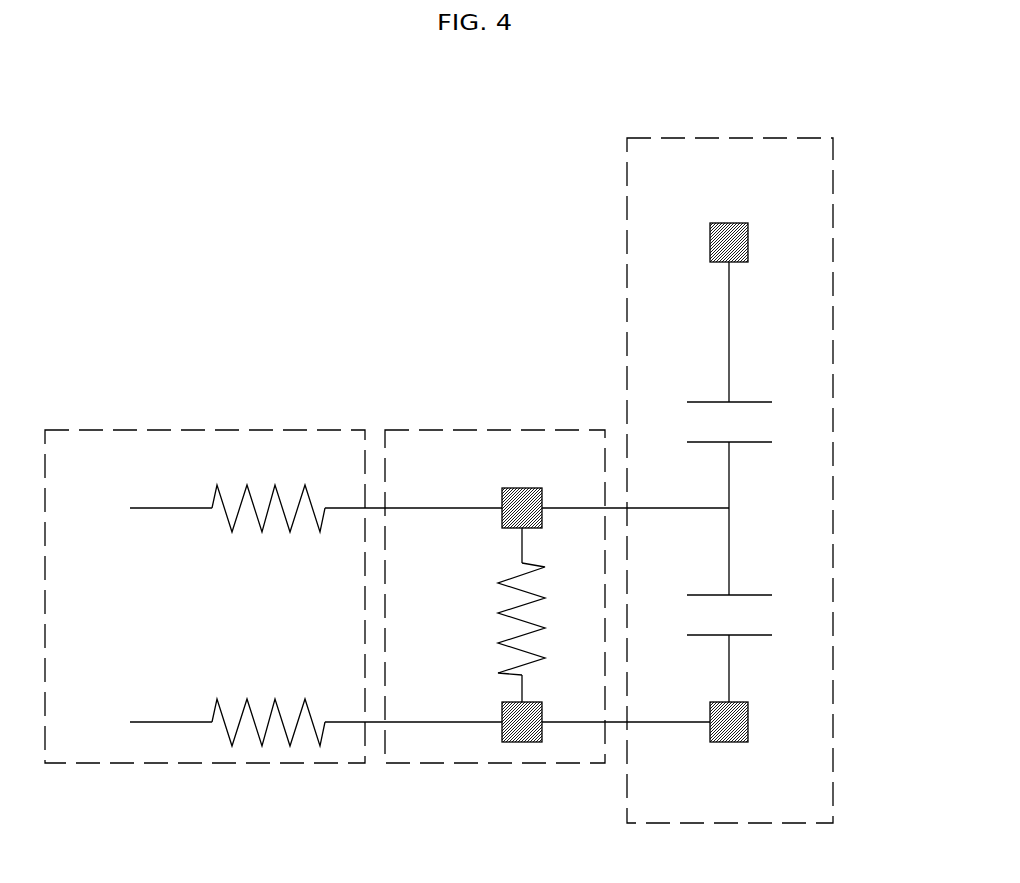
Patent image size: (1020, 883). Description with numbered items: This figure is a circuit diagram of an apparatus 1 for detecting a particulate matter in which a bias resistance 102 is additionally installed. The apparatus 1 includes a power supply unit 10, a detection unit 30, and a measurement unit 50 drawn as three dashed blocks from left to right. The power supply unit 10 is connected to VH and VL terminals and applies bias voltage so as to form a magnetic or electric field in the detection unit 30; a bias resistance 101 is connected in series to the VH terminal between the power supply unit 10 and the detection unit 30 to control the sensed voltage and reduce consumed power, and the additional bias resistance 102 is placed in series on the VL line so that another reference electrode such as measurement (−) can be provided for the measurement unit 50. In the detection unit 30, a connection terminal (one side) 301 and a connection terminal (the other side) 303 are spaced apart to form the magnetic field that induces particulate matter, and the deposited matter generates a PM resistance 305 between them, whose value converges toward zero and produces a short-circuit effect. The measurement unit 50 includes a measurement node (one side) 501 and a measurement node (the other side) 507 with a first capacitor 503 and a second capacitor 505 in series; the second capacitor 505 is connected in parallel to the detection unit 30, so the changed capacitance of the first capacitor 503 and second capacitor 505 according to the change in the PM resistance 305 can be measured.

The apparatus for detecting a particulate matter 1 is at (462, 92).
The power supply unit 10 is at (205, 587).
The detection unit 30 is at (495, 587).
The measurement unit 50 is at (793, 480).
The bias resistance 101 is at (297, 487).
The additional bias resistance 102 is at (280, 747).
The connection terminal (one side) 301 is at (520, 488).
The connection terminal (the other side) 303 is at (522, 742).
The PM resistance 305 is at (507, 643).
The measurement node (one side) 501 is at (748, 243).
The first capacitor 503 is at (753, 402).
The second capacitor 505 is at (753, 595).
The measurement node (the other side) 507 is at (748, 722).